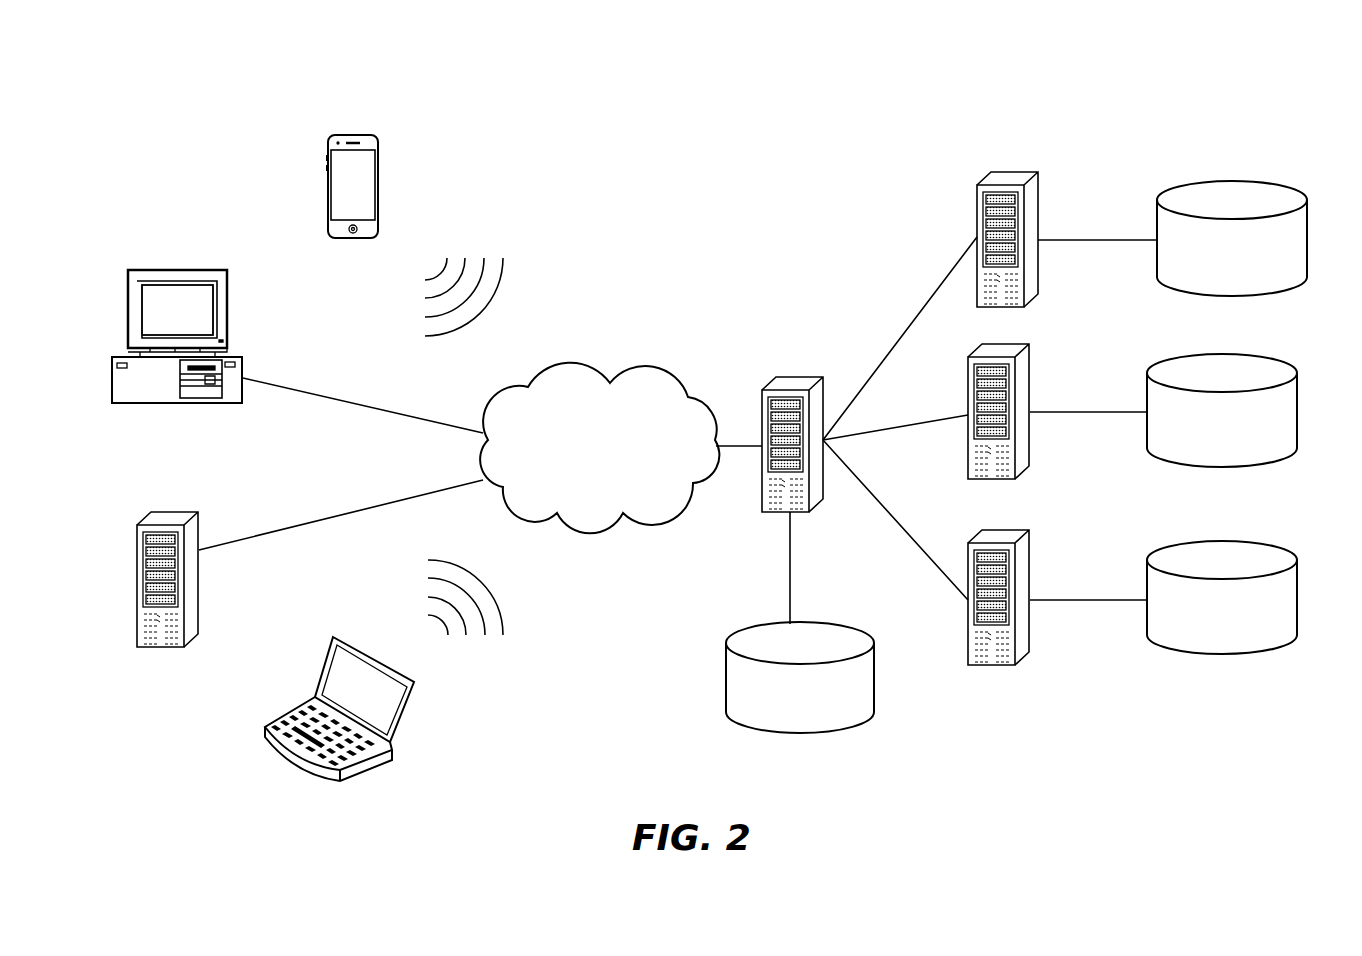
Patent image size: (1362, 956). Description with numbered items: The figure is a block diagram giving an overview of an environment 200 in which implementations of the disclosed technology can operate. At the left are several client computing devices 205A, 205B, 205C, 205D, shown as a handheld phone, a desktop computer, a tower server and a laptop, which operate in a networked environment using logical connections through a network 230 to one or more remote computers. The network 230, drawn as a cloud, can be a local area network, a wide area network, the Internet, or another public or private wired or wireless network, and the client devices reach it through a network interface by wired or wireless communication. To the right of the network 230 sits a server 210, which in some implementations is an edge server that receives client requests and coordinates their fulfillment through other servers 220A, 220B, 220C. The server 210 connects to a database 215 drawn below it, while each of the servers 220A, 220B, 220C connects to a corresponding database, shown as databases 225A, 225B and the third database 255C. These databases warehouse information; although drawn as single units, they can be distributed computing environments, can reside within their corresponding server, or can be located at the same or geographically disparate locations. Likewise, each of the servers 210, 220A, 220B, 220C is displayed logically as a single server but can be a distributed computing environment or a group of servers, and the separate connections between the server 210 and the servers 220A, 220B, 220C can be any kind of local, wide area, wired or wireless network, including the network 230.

The environment 200 is at (818, 142).
The client computing device 205A is at (368, 135).
The client computing device 205B is at (218, 270).
The client computing device 205C is at (188, 510).
The client computing device 205D is at (408, 715).
The network 230 is at (655, 368).
The server 210 is at (800, 375).
The database 215 is at (852, 622).
The server 220A is at (1038, 170).
The server 220B is at (1030, 342).
The server 220C is at (1030, 528).
The database 225A is at (1227, 180).
The database 225B is at (1218, 355).
The database 255C is at (1218, 542).